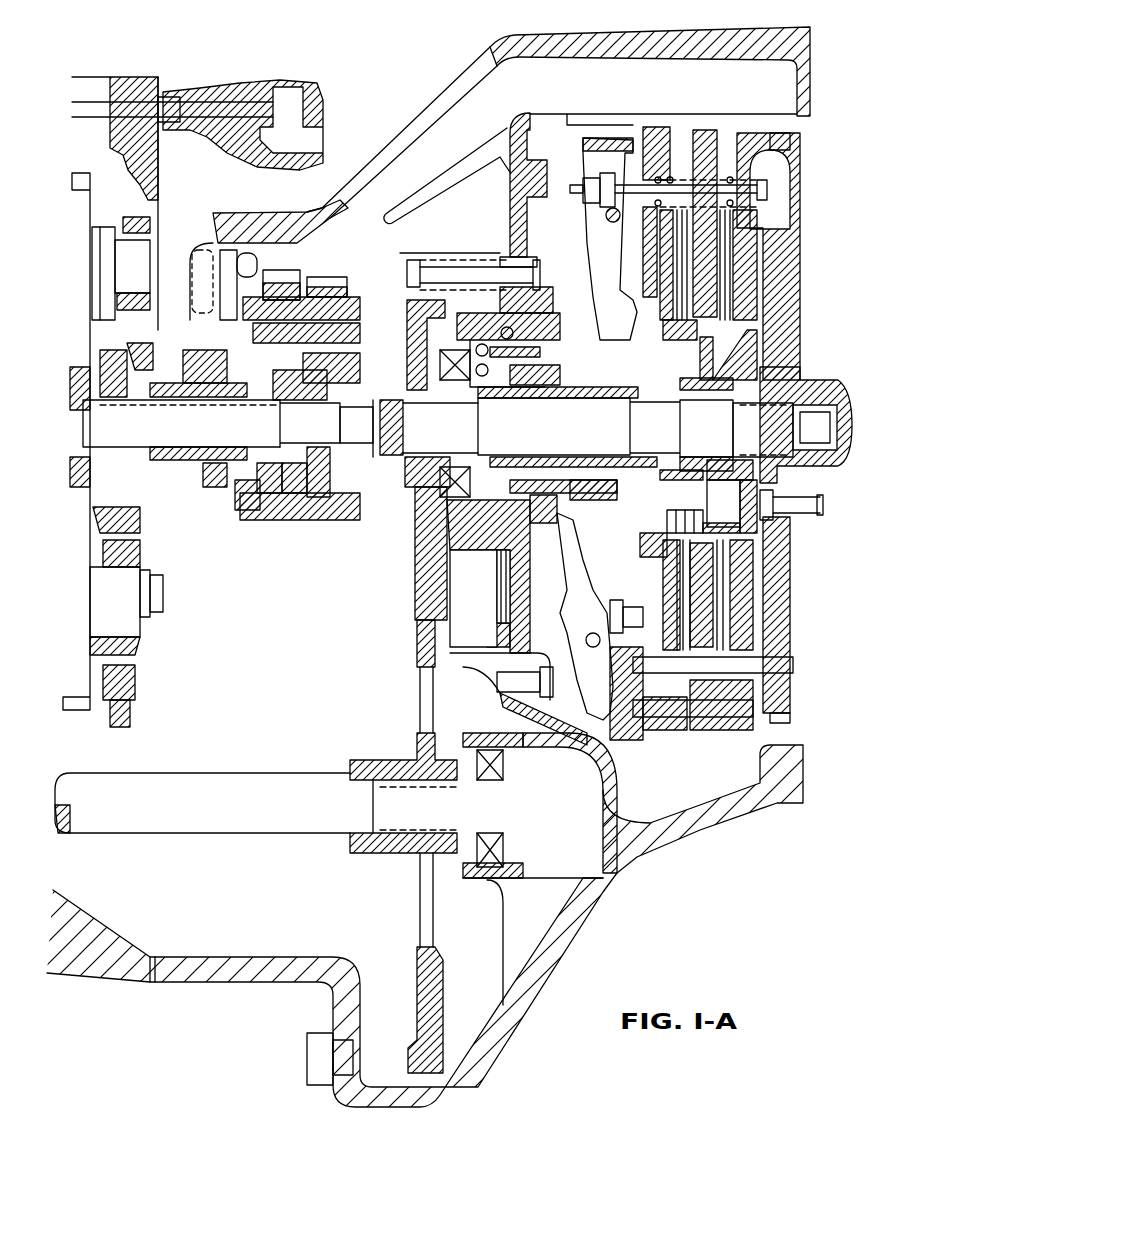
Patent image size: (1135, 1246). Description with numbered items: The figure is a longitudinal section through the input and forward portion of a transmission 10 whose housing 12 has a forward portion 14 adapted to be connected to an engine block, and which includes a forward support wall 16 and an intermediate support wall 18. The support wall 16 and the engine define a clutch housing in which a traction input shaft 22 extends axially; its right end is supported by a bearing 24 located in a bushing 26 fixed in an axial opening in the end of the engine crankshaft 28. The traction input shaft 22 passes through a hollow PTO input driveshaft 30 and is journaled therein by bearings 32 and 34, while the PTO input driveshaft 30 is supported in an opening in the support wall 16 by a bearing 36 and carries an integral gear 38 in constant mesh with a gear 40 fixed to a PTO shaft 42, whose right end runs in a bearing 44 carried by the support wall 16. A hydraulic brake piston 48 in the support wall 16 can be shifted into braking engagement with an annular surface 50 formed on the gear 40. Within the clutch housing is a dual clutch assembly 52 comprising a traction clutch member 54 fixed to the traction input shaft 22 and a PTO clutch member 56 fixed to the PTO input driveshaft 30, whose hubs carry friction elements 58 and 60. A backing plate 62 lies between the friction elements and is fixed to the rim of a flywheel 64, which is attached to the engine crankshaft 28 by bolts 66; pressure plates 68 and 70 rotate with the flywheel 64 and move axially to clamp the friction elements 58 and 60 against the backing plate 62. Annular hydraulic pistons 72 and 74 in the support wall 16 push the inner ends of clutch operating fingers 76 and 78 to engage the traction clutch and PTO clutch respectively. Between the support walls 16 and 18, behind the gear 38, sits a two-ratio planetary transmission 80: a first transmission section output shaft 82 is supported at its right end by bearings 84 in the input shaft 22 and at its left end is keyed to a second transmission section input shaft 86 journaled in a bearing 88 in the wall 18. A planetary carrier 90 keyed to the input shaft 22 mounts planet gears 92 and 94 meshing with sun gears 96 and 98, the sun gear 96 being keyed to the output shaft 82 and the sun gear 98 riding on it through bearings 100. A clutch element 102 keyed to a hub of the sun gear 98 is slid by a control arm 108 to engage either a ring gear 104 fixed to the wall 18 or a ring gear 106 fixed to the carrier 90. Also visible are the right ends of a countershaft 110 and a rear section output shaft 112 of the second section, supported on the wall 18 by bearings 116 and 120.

The transmission 10 is at (432, 66).
The housing 12 is at (401, 119).
The forward portion 14 is at (811, 38).
The forward support wall 16 is at (519, 127).
The intermediate support wall 18 is at (158, 164).
The traction input shaft 22 is at (635, 427).
The bearing 24 is at (788, 410).
The bushing 26 is at (845, 455).
The engine crankshaft 28 is at (845, 395).
The PTO input driveshaft 30 is at (545, 397).
The bearing 32 is at (455, 397).
The bearing 34 is at (708, 459).
The bearing 36 is at (452, 335).
The gear 38 is at (408, 530).
The gear 40 is at (417, 622).
The PTO shaft 42 is at (236, 778).
The bearing 44 is at (500, 848).
The hydraulic brake piston 48 is at (518, 647).
The annular surface 50 is at (444, 991).
The dual clutch assembly 52 is at (704, 104).
The traction clutch member 54 is at (755, 348).
The PTO clutch member 56 is at (700, 356).
The friction elements 58 is at (727, 300).
The friction elements 60 is at (678, 300).
The backing plate 62 is at (710, 258).
The flywheel 64 is at (797, 200).
The bolts 66 is at (808, 500).
The pressure plate 68 is at (790, 565).
The pressure plate 70 is at (648, 548).
The hydraulic piston 72 is at (580, 498).
The hydraulic piston 74 is at (518, 500).
The clutch operating fingers 76 is at (598, 290).
The clutch operating fingers 78 is at (580, 570).
The planetary transmission 80 is at (336, 260).
The first transmission section output shaft 82 is at (310, 423).
The bearings 84 is at (356, 428).
The second transmission section input shaft 86 is at (78, 408).
The bearing 88 is at (112, 367).
The planetary carrier 90 is at (313, 520).
The planet gear 92 is at (340, 276).
The planet gear 94 is at (288, 271).
The sun gear 96 is at (295, 480).
The sun gear 98 is at (270, 480).
The bearings 100 is at (250, 395).
The clutch element 102 is at (215, 480).
The ring gear 104 is at (190, 340).
The ring gear 106 is at (235, 492).
The control arm 108 is at (223, 292).
The countershaft 110 is at (118, 262).
The rear section output shaft 112 is at (126, 647).
The bearing 116 is at (160, 235).
The bearing 120 is at (132, 550).